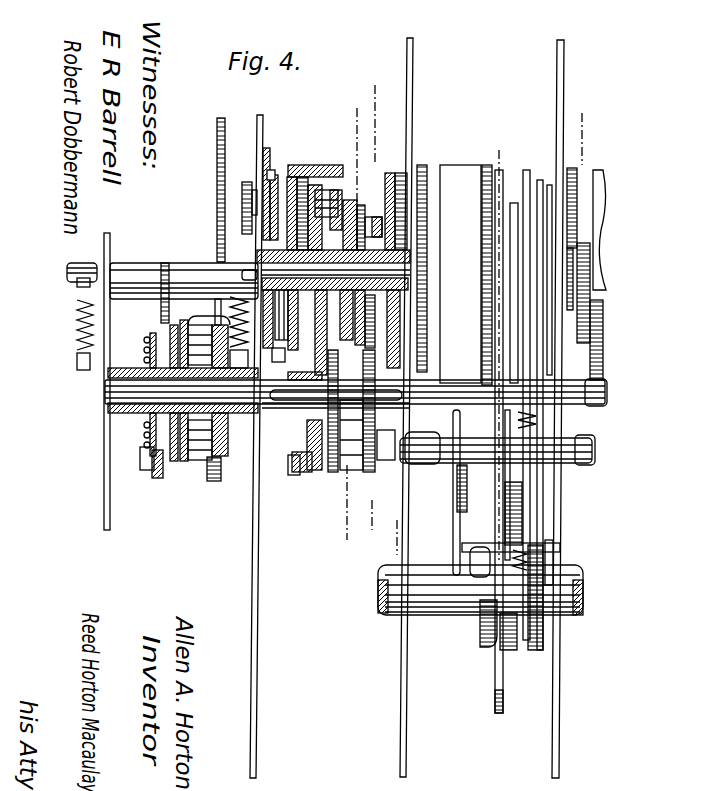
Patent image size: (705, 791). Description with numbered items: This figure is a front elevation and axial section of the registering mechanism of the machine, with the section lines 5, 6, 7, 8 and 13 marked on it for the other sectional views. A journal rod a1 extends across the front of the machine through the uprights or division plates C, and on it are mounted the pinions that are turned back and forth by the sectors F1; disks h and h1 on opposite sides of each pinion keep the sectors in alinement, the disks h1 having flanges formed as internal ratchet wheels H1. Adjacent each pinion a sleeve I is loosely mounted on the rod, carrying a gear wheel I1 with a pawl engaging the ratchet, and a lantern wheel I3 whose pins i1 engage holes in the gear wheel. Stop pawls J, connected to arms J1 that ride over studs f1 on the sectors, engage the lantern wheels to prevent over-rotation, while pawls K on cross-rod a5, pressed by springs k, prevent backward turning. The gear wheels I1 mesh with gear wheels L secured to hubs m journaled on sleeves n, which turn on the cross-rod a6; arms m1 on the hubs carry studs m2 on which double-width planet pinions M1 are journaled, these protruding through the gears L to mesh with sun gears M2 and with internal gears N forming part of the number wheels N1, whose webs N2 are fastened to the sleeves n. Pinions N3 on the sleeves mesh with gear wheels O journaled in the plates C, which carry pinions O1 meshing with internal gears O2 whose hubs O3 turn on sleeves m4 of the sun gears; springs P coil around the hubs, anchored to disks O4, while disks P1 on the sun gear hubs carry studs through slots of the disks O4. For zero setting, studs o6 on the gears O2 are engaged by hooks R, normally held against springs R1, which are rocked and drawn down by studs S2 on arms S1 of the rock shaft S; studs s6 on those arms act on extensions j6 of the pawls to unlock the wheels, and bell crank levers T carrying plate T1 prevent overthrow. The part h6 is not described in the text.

The sleeve I is at (133, 410).
The cross-rod a5 is at (77, 297).
The springs k is at (78, 333).
The pawls K is at (160, 317).
The studs or pins i1 is at (160, 282).
The journal rod a1 is at (110, 405).
The studs f1 is at (163, 423).
The lantern wheel I3 is at (105, 500).
The arms J1 is at (210, 462).
The gear wheel I1 is at (185, 455).
The stop pawls J is at (165, 455).
The disks h1 is at (185, 455).
The ratchet wheels H1 is at (215, 460).
The disks h is at (238, 470).
The webs N2 is at (258, 185).
The sectors F1 is at (218, 143).
The pinions O1 is at (218, 198).
The sleeves n is at (262, 222).
The pinions N3 is at (255, 245).
The uprights / division plates C is at (262, 660).
The gear wheels L is at (527, 170).
The arms m1 is at (315, 165).
The hubs m is at (298, 177).
The pinions / planet gears M1 is at (347, 187).
The sun gears M2 is at (363, 210).
The studs m2 is at (390, 178).
The internal gears N is at (325, 165).
The section line 7— 7 is at (385, 85).
The section line 5— 5 is at (360, 108).
The section line 8— 8 is at (343, 125).
The section line 13— 13 is at (407, 57).
The cross-bar or plate T1 is at (348, 470).
The internal gears O2 is at (448, 152).
The springs P is at (470, 165).
The sleeves m4 is at (460, 187).
The hubs O3 is at (403, 277).
The number wheels N1 is at (497, 132).
The levers T is at (503, 698).
The disk P1 is at (513, 203).
The studs or pins o6 is at (540, 180).
The section line 6— 6 is at (603, 113).
The gear wheels O is at (578, 172).
The disk O4 is at (518, 227).
The housing h6 is at (453, 400).
The cross-rod a6 is at (595, 450).
The hook R is at (527, 503).
The studs S2 is at (610, 512).
The spring R1 is at (543, 550).
The arms S1 is at (543, 585).
The rock shaft S is at (575, 592).
The studs or pins s6 is at (473, 550).
The downward extensions j6 is at (452, 553).